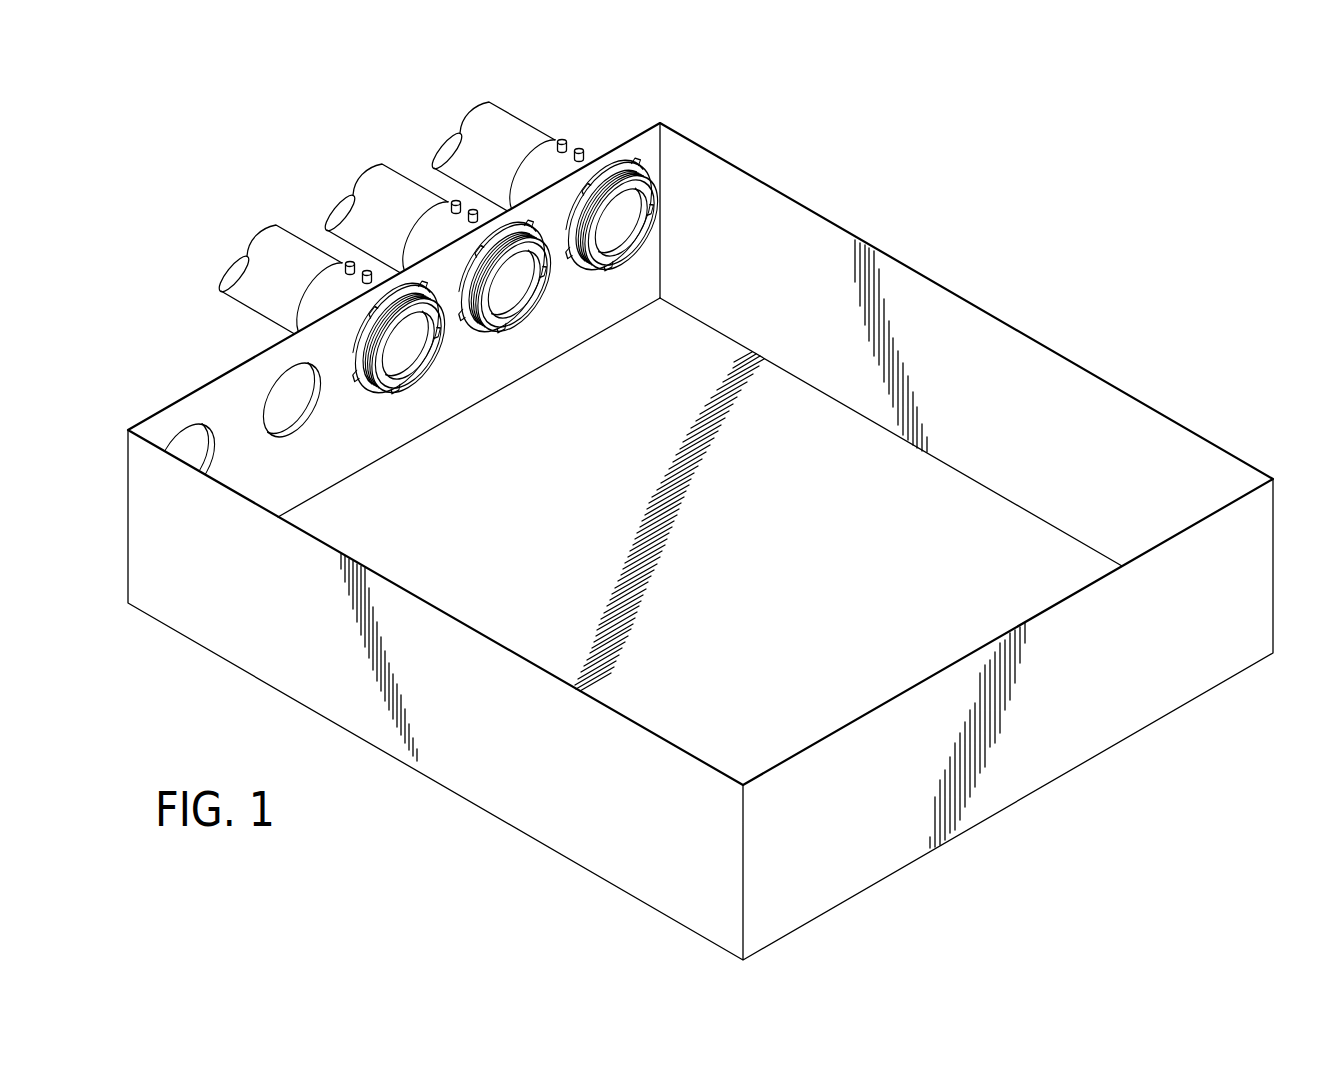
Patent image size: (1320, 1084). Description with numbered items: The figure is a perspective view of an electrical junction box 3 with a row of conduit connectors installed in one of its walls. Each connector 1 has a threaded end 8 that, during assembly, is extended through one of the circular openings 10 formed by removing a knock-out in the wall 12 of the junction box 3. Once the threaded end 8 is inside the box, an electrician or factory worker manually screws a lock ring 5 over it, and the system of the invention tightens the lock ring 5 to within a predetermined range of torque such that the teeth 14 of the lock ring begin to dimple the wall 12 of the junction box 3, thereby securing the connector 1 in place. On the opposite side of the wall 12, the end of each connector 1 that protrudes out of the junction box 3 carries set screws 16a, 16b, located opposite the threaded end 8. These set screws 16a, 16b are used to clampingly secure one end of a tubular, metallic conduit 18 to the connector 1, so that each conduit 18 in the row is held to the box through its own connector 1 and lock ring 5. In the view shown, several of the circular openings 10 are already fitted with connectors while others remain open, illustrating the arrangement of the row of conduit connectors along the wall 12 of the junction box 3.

The connector 1 is at (586, 128).
The junction box 3 is at (749, 567).
The lock ring 5 is at (640, 165).
The threaded end 8 is at (647, 236).
The circular opening 10 is at (309, 399).
The wall 12 is at (477, 385).
The teeth 14 is at (603, 178).
The set screw 16a is at (453, 203).
The set screw 16b is at (471, 209).
The conduit 18 is at (302, 281).